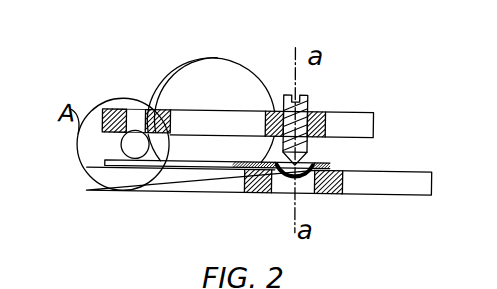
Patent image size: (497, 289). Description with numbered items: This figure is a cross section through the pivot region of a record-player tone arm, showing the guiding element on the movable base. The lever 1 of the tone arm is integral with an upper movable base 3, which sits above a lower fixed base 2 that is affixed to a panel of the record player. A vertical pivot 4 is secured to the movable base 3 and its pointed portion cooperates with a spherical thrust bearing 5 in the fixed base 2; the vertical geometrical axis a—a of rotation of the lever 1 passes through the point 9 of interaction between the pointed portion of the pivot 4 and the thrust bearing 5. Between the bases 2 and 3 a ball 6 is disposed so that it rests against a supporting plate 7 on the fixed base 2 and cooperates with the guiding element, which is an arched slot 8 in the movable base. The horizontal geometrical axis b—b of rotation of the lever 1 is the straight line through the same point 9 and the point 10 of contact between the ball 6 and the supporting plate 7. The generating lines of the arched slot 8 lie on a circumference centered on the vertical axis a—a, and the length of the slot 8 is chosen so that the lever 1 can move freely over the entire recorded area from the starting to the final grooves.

The lever 1 is at (232, 73).
The lower fixed base 2 is at (398, 185).
The upper movable base 3 is at (363, 121).
The vertical pivot 4 is at (310, 108).
The thrust bearing 5 is at (273, 192).
The ball 6 is at (107, 111).
The supporting plate 7 is at (200, 168).
The arched slot 8 is at (138, 117).
The point of interaction 9 is at (312, 167).
The point of contact 10 is at (127, 139).